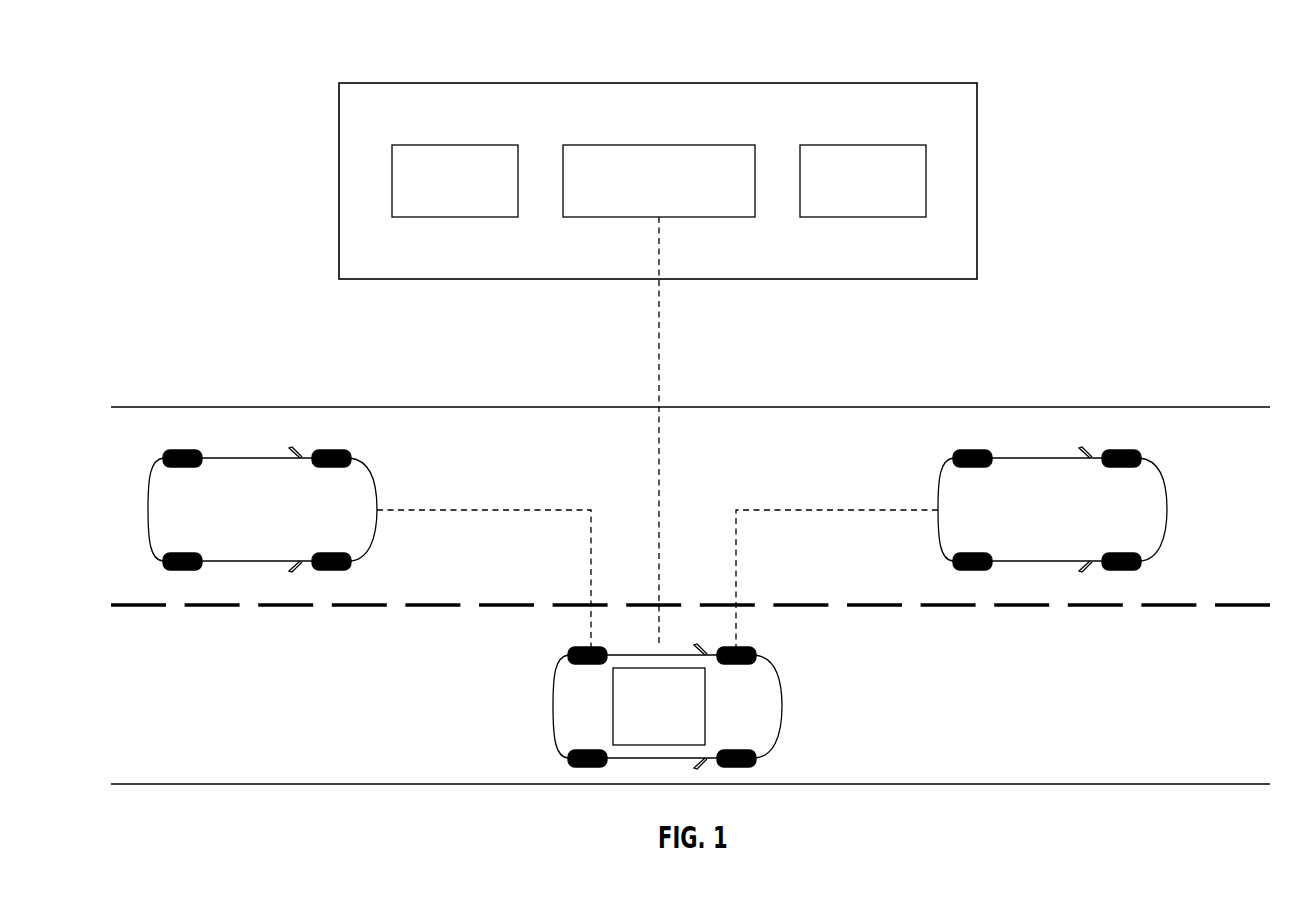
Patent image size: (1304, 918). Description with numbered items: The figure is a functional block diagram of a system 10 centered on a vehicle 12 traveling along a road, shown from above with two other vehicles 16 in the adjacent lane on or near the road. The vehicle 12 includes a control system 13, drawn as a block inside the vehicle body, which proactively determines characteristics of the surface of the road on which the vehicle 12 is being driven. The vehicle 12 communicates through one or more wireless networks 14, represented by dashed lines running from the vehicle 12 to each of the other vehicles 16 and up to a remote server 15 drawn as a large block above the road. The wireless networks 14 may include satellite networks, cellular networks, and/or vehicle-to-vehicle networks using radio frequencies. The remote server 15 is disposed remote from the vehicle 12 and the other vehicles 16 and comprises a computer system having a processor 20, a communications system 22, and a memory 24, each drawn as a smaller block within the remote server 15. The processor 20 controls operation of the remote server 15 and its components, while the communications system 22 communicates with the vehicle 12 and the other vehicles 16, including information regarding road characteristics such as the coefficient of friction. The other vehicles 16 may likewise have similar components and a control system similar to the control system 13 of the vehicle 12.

The system 10 is at (1203, 70).
The vehicle 12 is at (742, 648).
The control system 13 is at (705, 707).
The wireless networks 14 is at (659, 347).
The remote server 15 is at (938, 82).
The other vehicles 16 is at (330, 451).
The processor 20 is at (478, 145).
The communications system 22 is at (713, 145).
The memory 24 is at (885, 145).